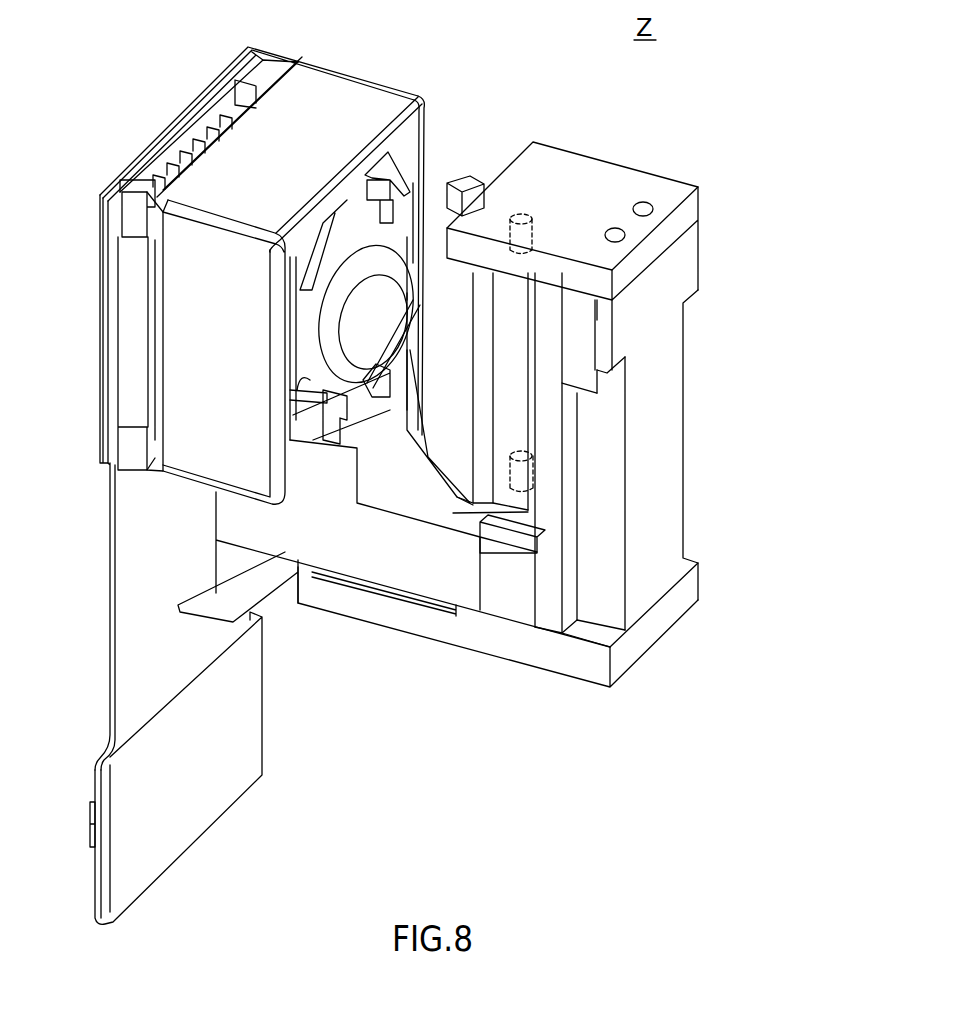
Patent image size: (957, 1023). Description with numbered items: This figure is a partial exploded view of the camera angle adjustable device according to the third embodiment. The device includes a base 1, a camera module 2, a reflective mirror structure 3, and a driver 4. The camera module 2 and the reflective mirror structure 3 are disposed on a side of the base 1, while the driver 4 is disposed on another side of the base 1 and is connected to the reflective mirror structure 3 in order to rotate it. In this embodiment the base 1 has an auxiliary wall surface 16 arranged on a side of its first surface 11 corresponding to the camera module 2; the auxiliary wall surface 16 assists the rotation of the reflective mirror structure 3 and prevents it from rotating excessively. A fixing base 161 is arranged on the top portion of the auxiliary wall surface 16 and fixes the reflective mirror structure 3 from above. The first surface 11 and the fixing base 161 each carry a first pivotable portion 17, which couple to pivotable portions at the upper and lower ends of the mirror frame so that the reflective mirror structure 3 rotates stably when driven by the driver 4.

The base 1 is at (574, 374).
The camera module 2 is at (362, 78).
The reflective mirror structure 3 is at (473, 178).
The driver 4 is at (397, 630).
The first surface 11 is at (413, 497).
The auxiliary wall surface 16 is at (667, 418).
The fixing base 161 is at (587, 172).
The first pivotable portion 17 is at (522, 218).